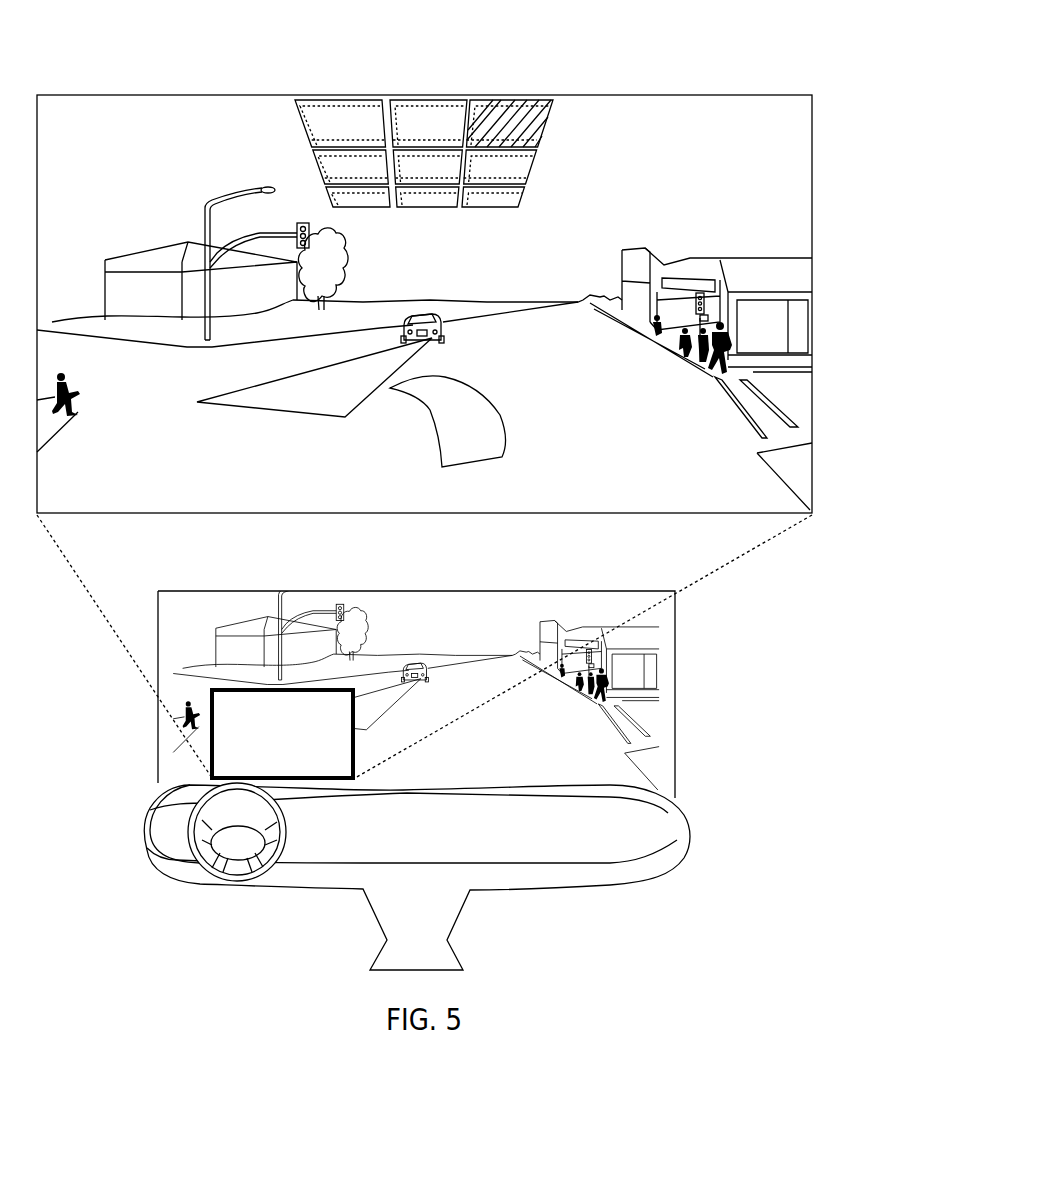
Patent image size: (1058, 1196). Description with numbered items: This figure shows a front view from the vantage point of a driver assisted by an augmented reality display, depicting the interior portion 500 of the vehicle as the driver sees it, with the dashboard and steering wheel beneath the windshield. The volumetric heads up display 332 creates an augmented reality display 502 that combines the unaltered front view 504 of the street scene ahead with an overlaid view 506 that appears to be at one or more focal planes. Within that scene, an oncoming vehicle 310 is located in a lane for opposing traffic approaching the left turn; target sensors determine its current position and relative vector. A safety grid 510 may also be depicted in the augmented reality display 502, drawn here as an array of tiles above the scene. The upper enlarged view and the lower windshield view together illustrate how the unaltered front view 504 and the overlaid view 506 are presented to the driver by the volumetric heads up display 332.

The interior portion 500 is at (693, 670).
The augmented reality display 502 is at (424, 321).
The unaltered front view 504 is at (113, 137).
The overlaid view 506 is at (470, 355).
The safety grid 510 is at (540, 161).
The oncoming vehicle 310 is at (440, 322).
The volumetric heads up display 332 is at (754, 92).